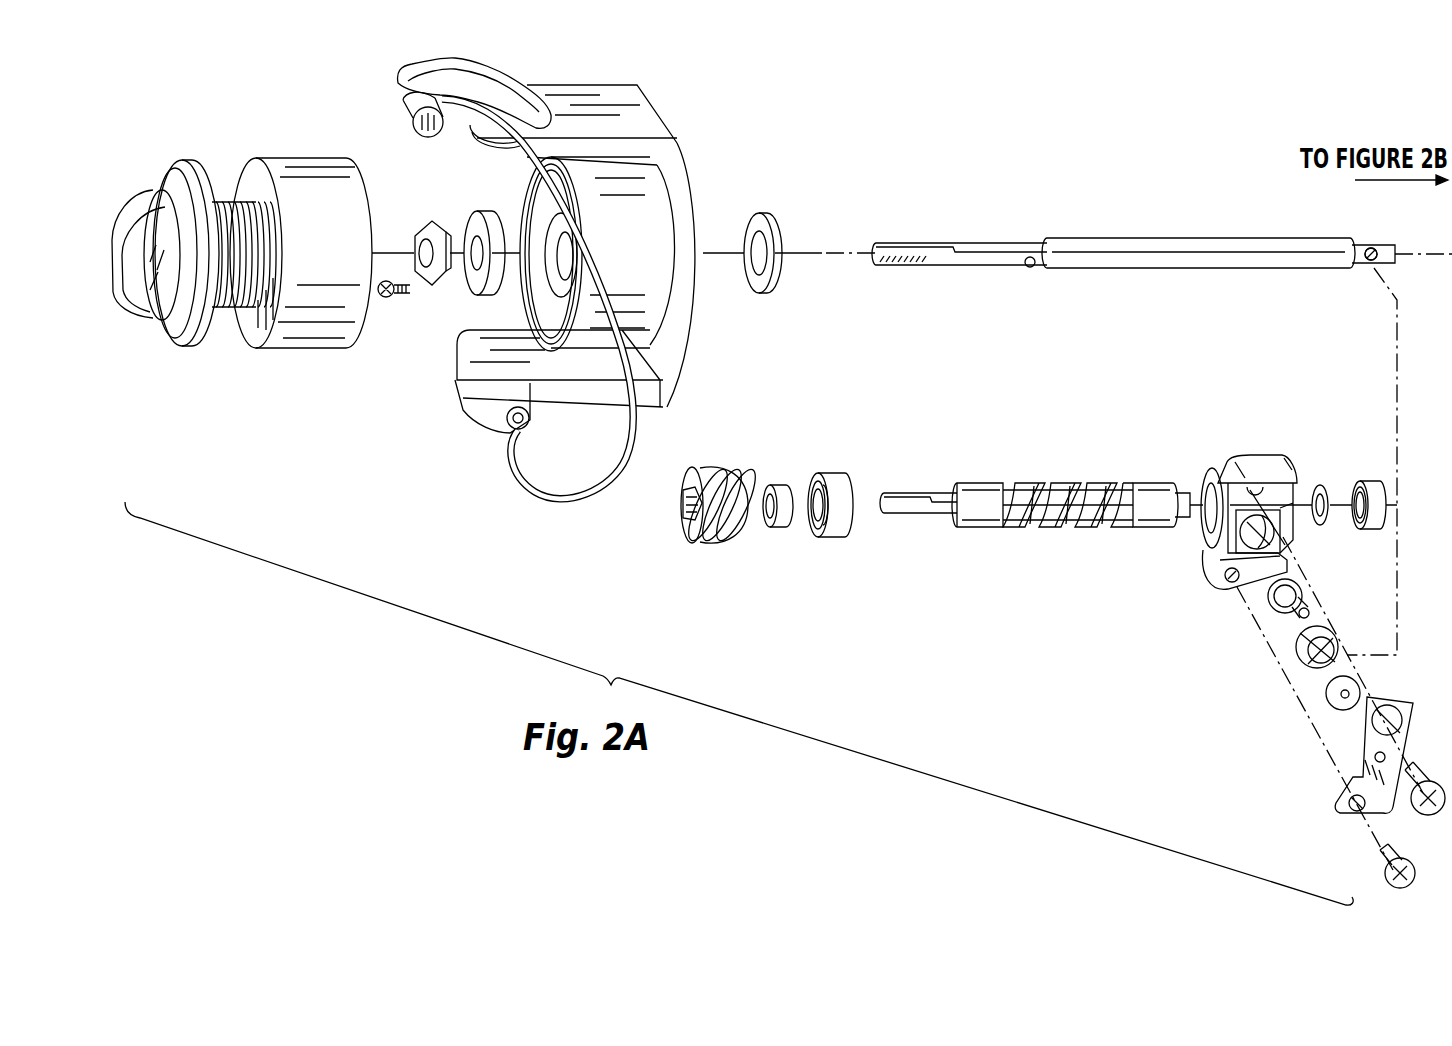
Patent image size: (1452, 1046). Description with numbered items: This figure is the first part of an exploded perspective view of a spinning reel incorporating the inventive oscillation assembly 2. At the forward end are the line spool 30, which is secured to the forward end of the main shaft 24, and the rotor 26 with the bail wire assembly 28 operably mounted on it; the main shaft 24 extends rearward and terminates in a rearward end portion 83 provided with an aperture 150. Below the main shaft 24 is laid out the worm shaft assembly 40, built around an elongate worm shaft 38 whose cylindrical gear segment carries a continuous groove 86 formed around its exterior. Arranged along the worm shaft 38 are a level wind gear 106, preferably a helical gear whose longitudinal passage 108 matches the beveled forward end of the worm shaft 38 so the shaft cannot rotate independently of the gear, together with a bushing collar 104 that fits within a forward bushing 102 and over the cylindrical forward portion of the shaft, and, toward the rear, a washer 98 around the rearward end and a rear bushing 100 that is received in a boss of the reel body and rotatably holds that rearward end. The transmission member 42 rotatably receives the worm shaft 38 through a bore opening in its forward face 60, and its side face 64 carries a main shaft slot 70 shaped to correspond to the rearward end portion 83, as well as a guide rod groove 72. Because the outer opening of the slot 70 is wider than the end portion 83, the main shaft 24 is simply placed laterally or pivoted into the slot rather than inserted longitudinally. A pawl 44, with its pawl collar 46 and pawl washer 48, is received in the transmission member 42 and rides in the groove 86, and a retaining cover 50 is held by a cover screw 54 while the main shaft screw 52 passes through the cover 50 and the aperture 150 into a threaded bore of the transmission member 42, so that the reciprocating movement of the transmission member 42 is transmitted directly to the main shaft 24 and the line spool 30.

The oscillation assembly 2 is at (1070, 594).
The main shaft 24 is at (1133, 239).
The rotor 26 is at (638, 103).
The bail wire assembly 28 is at (517, 432).
The line spool 30 is at (313, 164).
The worm shaft 38 is at (1103, 486).
The worm shaft assembly 40 is at (1035, 449).
The transmission member 42 is at (1258, 458).
The pawl 44 is at (1283, 612).
The pawl collar 46 is at (1300, 657).
The pawl washer 48 is at (1332, 705).
The retaining cover 50 is at (1340, 790).
The main shaft screw 52 is at (1428, 768).
The cover screw 54 is at (1385, 870).
The forward face 60 is at (1244, 483).
The side face 64 is at (1283, 540).
The main shaft slot 70 is at (1214, 468).
The guide rod groove 72 is at (1222, 568).
The rearward end portion 83 is at (1358, 249).
The continuous groove 86 is at (1046, 486).
The washer 98 is at (1321, 485).
The rear bushing 100 is at (1362, 481).
The forward bushing 102 is at (835, 530).
The bushing collar 104 is at (780, 488).
The level wind gear 106 is at (702, 538).
The passage 108 is at (683, 508).
The aperture 150 is at (1368, 265).